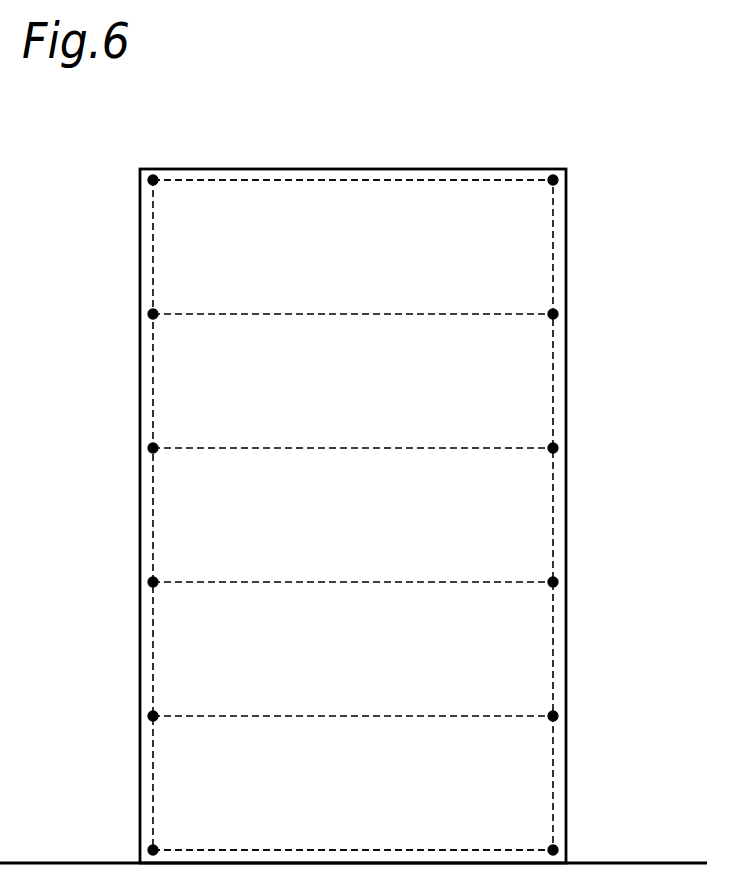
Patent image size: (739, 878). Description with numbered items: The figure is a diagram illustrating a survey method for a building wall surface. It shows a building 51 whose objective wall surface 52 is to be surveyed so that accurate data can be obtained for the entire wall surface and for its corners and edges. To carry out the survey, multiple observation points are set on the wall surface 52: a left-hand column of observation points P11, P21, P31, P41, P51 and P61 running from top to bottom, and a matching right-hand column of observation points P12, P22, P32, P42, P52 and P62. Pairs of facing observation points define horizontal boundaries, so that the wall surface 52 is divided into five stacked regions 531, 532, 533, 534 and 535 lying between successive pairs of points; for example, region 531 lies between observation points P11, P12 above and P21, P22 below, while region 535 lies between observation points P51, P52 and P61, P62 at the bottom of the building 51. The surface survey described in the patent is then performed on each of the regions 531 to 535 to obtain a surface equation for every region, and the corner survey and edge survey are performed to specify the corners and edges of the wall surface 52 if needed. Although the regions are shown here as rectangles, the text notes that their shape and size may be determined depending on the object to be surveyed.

The building 51 is at (372, 168).
The wall surface 52 is at (468, 178).
The region 531 is at (378, 259).
The region 532 is at (378, 393).
The region 533 is at (378, 527).
The region 534 is at (378, 661).
The region 535 is at (378, 795).
The observation point P11 is at (121, 182).
The observation point P12 is at (586, 182).
The observation point P21 is at (121, 316).
The observation point P22 is at (586, 316).
The observation point P31 is at (121, 450).
The observation point P32 is at (586, 450).
The observation point P41 is at (121, 584).
The observation point P42 is at (586, 584).
The observation point P51 is at (121, 718).
The observation point P52 is at (586, 718).
The observation point P61 is at (121, 841).
The observation point P62 is at (586, 841).